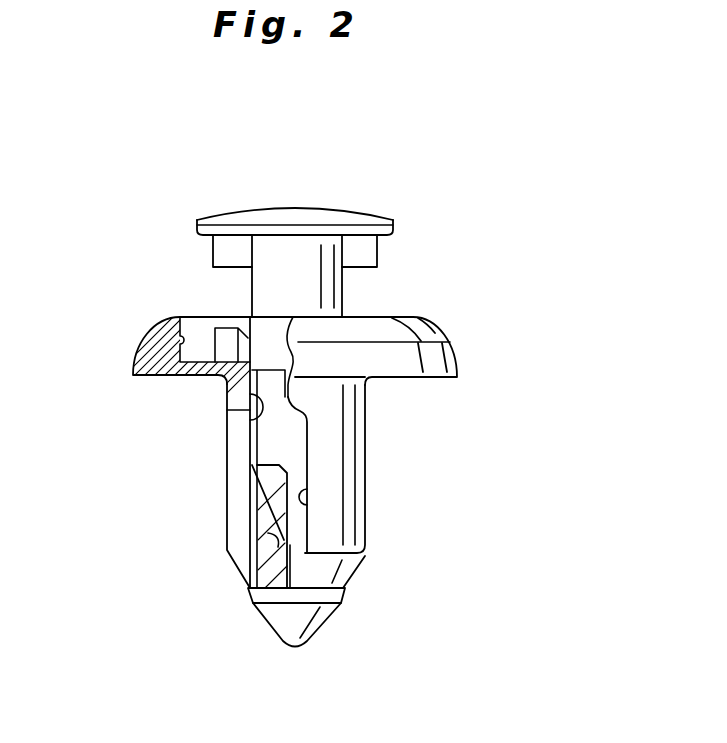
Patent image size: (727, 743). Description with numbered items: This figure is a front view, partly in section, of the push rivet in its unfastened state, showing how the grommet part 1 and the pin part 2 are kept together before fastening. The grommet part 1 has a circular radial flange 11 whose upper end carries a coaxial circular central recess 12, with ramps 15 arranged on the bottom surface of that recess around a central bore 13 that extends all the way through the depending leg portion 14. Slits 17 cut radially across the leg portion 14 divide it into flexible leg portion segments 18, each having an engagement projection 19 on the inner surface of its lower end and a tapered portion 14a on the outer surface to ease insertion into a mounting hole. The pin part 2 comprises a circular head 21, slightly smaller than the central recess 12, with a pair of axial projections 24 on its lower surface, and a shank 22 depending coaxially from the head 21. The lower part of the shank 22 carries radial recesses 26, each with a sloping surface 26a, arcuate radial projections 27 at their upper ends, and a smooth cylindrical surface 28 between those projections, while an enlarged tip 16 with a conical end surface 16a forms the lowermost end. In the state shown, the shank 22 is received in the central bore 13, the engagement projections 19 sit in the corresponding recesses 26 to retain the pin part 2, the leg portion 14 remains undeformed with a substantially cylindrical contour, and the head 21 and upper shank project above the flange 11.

The grommet part 1 is at (306, 477).
The pin part 2 is at (284, 228).
The circular radial flange 11 is at (277, 337).
The circular central recess 12 is at (180, 340).
The central bore 13 is at (255, 418).
The leg portion 14 is at (367, 420).
The tapered portion 14a is at (345, 590).
The ramp 15 is at (225, 335).
The enlarged tip 16 is at (283, 628).
The conical end surface 16a is at (333, 632).
The slit 17 is at (300, 497).
The leg portion segment 18 is at (225, 445).
The engagement projection 19 is at (258, 562).
The circular head 21 is at (258, 222).
The shank 22 is at (345, 293).
The axial projection 24 is at (220, 255).
The radial recess 26 is at (278, 525).
The sloping surface 26a is at (278, 498).
The arcuate radial projection 27 is at (255, 478).
The smooth cylindrical surface 28 is at (300, 455).